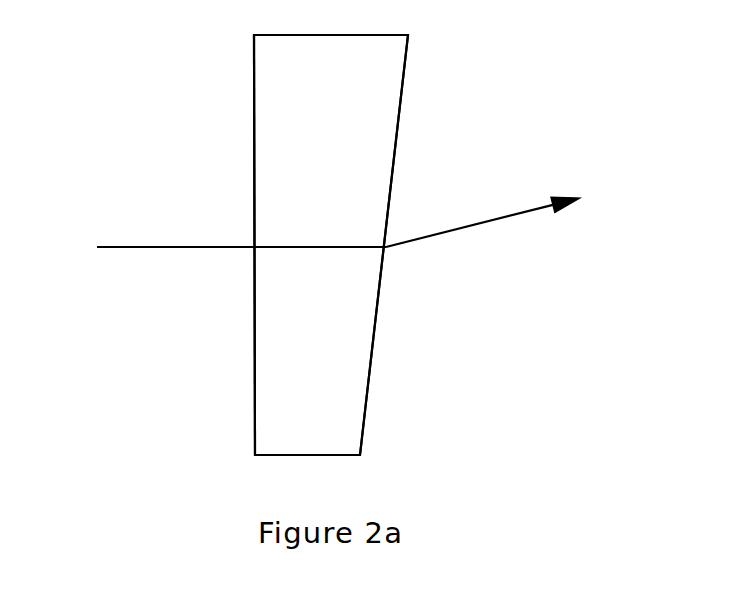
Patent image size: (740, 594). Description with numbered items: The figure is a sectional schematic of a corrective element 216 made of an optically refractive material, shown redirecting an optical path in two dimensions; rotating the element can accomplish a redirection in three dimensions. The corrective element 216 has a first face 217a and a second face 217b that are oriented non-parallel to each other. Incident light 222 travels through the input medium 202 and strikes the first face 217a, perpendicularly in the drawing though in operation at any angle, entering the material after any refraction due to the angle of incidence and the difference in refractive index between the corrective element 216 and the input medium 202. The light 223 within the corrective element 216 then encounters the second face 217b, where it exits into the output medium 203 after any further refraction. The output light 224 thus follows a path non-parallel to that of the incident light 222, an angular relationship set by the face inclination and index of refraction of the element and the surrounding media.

The corrective element 216 is at (352, 108).
The input medium 202 is at (160, 143).
The output medium 203 is at (560, 108).
The incident light 222 is at (158, 248).
The light within corrective element 223 is at (312, 246).
The output light 224 is at (472, 223).
The first face 217a is at (227, 394).
The second face 217b is at (400, 361).